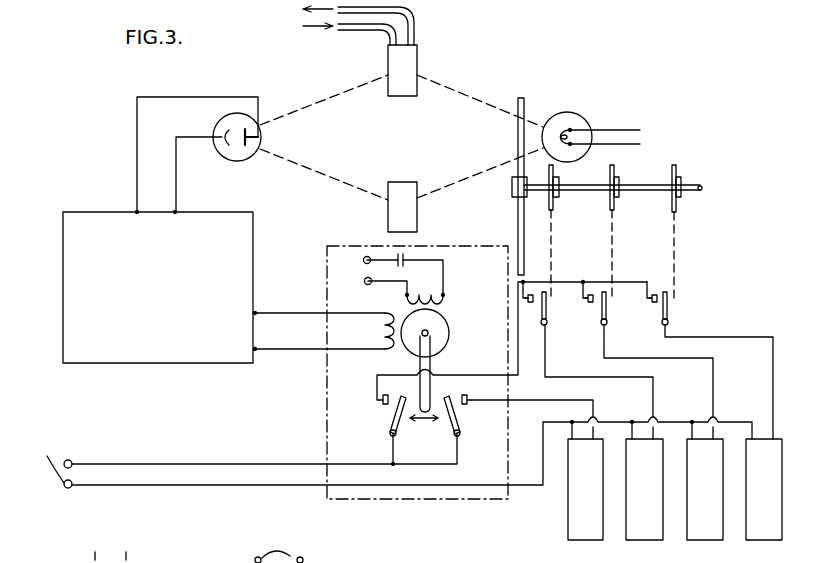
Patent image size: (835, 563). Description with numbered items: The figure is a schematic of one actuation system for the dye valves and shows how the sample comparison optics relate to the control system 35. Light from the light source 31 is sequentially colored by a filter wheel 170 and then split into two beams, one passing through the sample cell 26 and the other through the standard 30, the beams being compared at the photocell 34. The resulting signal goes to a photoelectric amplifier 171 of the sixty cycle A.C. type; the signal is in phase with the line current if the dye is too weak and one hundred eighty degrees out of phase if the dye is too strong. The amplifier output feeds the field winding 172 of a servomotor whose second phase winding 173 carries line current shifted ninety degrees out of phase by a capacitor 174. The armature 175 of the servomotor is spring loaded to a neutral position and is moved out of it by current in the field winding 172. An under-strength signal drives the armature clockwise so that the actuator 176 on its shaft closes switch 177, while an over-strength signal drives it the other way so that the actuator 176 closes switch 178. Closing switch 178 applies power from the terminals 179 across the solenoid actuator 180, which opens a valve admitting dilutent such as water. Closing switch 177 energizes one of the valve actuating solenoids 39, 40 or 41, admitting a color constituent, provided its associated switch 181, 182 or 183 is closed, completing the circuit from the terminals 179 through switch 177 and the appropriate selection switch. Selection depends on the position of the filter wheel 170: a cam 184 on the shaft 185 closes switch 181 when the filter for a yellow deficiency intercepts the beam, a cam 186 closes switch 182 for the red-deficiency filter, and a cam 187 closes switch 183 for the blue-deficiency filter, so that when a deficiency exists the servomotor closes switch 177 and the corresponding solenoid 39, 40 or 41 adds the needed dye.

The sample cell 26 is at (417, 68).
The standard 30 is at (417, 222).
The light source 31 is at (582, 118).
The photocell 34 is at (214, 128).
The control system 35 is at (301, 390).
The valve actuating solenoid 39 is at (645, 533).
The valve actuating solenoid 40 is at (707, 533).
The valve actuating solenoid 41 is at (763, 533).
The filter wheel 170 is at (518, 219).
The photoelectric amplifier 171 is at (162, 319).
The field winding 172 is at (384, 339).
The coil 173 is at (446, 301).
The capacitor 174 is at (410, 256).
The servomotor armature 175 is at (441, 351).
The actuator 176 is at (431, 389).
The switch 177 is at (399, 406).
The switch 178 is at (452, 406).
The terminals 179 is at (166, 500).
The solenoid actuator 180 is at (573, 506).
The switch 181 is at (548, 306).
The switch 182 is at (607, 310).
The switch 183 is at (668, 312).
The cam 184 is at (555, 206).
The shaft 185 is at (640, 183).
The cam 186 is at (616, 206).
The cam 187 is at (677, 172).